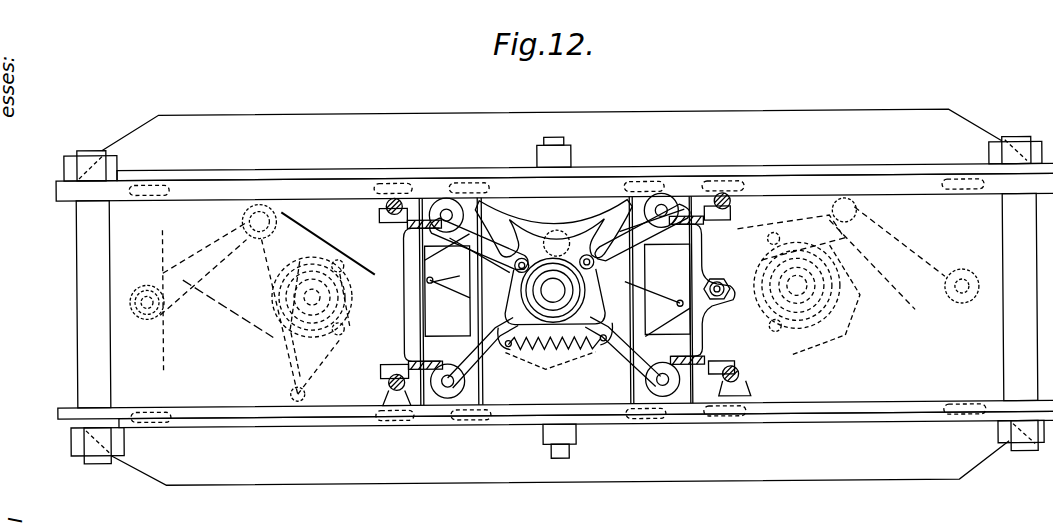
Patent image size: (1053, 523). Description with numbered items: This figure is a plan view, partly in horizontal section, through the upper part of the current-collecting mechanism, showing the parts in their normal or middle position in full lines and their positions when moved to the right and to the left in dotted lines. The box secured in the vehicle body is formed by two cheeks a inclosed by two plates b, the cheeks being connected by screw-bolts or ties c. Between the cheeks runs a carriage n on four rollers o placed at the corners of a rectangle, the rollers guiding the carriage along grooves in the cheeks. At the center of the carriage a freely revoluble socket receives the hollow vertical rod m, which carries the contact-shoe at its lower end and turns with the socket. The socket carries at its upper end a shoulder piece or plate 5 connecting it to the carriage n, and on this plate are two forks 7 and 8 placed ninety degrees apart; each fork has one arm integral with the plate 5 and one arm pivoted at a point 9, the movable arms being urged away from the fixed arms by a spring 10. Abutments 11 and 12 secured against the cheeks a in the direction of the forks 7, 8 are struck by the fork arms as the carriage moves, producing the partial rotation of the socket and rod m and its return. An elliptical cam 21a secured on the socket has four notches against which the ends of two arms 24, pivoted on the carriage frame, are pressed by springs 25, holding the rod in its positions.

The cheeks a is at (282, 190).
The plates b is at (200, 180).
The screw-bolts or ties c is at (80, 310).
The rollers o is at (388, 185).
The carriage n is at (452, 350).
The rod m is at (556, 289).
The shoulder piece or plate 5 is at (554, 233).
The fork 7 is at (765, 232).
The fork 8 is at (370, 250).
The pivot point 9 is at (563, 295).
The spring 10 is at (564, 352).
The abutment 11 is at (732, 218).
The abutment 12 is at (392, 226).
The elliptical cam 21a is at (868, 290).
The arms 24 is at (200, 273).
The springs 25 is at (652, 272).